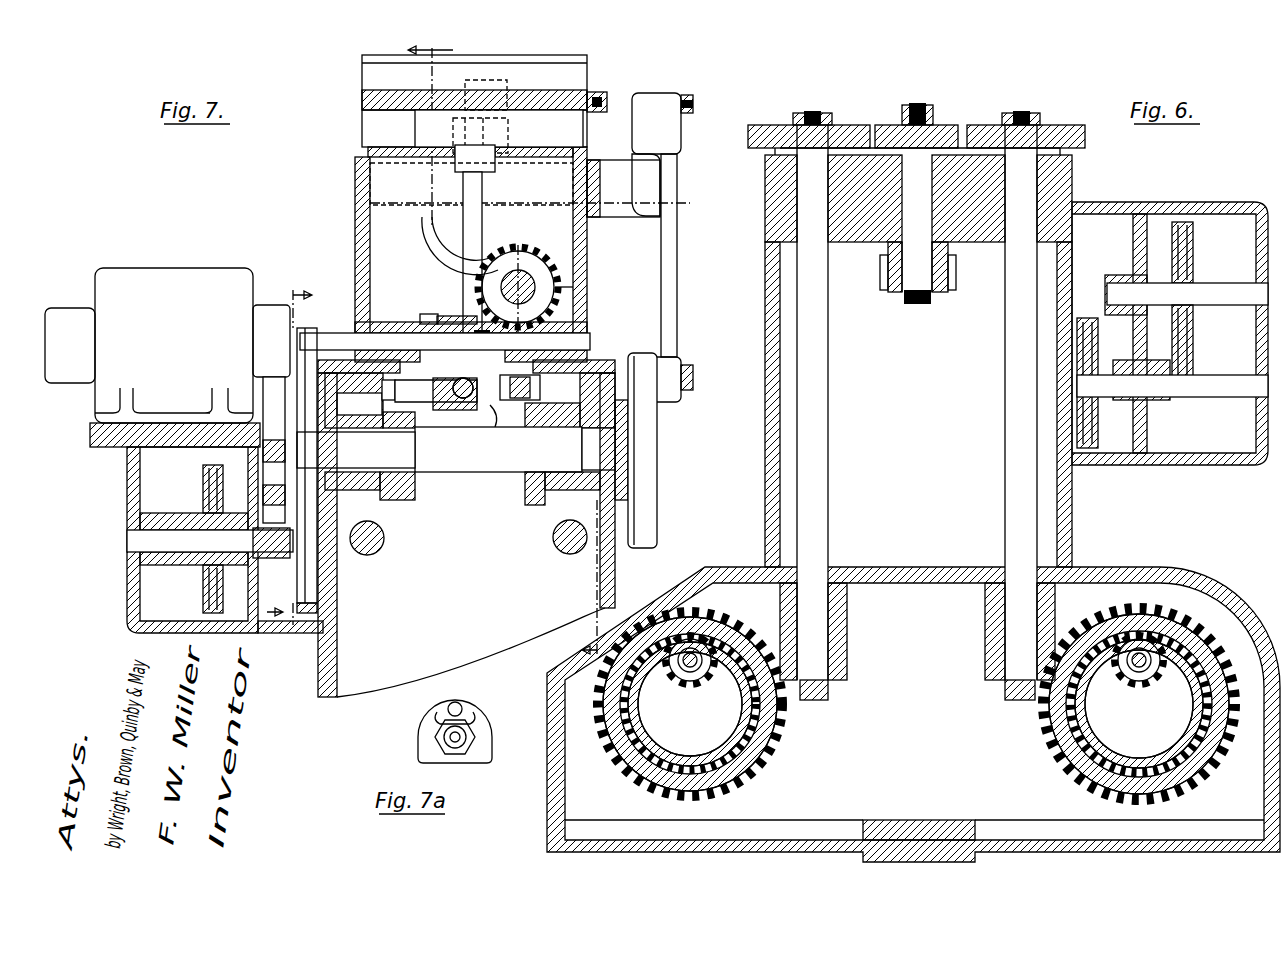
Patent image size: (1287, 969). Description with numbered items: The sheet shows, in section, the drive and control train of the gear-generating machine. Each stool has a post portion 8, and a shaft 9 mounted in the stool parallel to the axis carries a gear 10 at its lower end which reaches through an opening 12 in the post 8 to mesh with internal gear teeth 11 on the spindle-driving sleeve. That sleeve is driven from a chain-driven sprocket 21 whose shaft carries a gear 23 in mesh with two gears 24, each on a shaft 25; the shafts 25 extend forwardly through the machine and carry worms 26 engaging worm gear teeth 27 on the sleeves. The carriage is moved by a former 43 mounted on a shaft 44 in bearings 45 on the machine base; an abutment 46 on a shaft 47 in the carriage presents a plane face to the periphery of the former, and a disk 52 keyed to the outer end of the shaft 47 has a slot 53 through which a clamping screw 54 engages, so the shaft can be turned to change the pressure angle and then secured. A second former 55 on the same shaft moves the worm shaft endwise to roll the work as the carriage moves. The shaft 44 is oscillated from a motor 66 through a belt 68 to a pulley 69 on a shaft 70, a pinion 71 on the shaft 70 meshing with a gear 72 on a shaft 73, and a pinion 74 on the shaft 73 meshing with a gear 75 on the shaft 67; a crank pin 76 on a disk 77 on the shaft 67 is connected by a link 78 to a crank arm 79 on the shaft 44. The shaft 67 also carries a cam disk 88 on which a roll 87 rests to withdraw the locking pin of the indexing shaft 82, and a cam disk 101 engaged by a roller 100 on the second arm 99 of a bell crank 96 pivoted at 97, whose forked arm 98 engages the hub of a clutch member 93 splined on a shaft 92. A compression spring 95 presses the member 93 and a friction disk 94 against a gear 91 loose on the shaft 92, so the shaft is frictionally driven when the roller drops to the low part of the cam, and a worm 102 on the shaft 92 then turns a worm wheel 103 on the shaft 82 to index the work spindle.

In FIG. 6, the post portion 8 is at (627, 780).
In FIG. 7, the post portion 8 is at (495, 351).
In FIG. 6, the shaft 9 is at (692, 674).
In FIG. 6, the gear 10 is at (647, 692).
In FIG. 6, the internal gear teeth 11 is at (646, 716).
In FIG. 6, the opening 12 is at (722, 678).
In FIG. 7, the opening 12 is at (302, 455).
In FIG. 6, the sprocket 21 is at (898, 306).
In FIG. 6, the gear 23 is at (948, 125).
In FIG. 6, the gears 24 is at (771, 125).
In FIG. 6, the shafts 25 is at (830, 452).
In FIG. 6, the worms 26 is at (848, 720).
In FIG. 6, the worm gear teeth 27 is at (772, 762).
In FIG. 7, the former 43 is at (488, 86).
In FIG. 7, the shaft 44 is at (545, 188).
In FIG. 7, the bearings 45 is at (548, 112).
In FIG. 7, the abutment 46 is at (497, 172).
In FIG. 7A, the shaft 47 is at (437, 737).
In FIG. 7, the disk 52 is at (600, 92).
In FIG. 7A, the disk 52 is at (488, 733).
In FIG. 7A, the slot 53 is at (472, 713).
In FIG. 7, the clamping screw 54 is at (683, 100).
In FIG. 7A, the clamping screw 54 is at (455, 702).
In FIG. 7, the second former 55 is at (440, 255).
In FIG. 7, the motor 66 is at (145, 270).
In FIG. 7, the shaft 67 is at (478, 472).
In FIG. 7, the belt 68 is at (318, 582).
In FIG. 6, the pulley 69 is at (1094, 320).
In FIG. 7, the pulley 69 is at (320, 610).
In FIG. 6, the shaft 70 is at (1205, 376).
In FIG. 6, the pinion 71 is at (1182, 402).
In FIG. 6, the gear 72 is at (1208, 206).
In FIG. 7, the gear 72 is at (203, 482).
In FIG. 6, the shaft 73 is at (1205, 288).
In FIG. 7, the shaft 73 is at (128, 543).
In FIG. 6, the pinion 74 is at (1122, 275).
In FIG. 7, the pinion 74 is at (213, 574).
In FIG. 7, the gear 75 is at (265, 375).
In FIG. 7, the crank pin 76 is at (695, 380).
In FIG. 7, the disk 77 is at (645, 448).
In FIG. 7, the link 78 is at (678, 310).
In FIG. 7, the crank arm 79 is at (648, 155).
In FIG. 7, the shaft 82 is at (526, 268).
In FIG. 7, the roll 87 is at (540, 396).
In FIG. 7, the cam disk 88 is at (530, 508).
In FIG. 7, the gear 91 is at (410, 326).
In FIG. 7, the shaft 92 is at (590, 336).
In FIG. 7, the clutch member 93 is at (470, 330).
In FIG. 7, the friction disk 94 is at (428, 314).
In FIG. 7, the compression spring 95 is at (518, 428).
In FIG. 7, the bell crank 96 is at (500, 432).
In FIG. 7, the pivot 97 is at (465, 412).
In FIG. 7, the forked arm 98 is at (485, 253).
In FIG. 7, the second arm 99 is at (402, 432).
In FIG. 7, the roller 100 is at (386, 392).
In FIG. 7, the cam disk 101 is at (392, 502).
In FIG. 7, the worm 102 is at (580, 346).
In FIG. 7, the worm wheel 103 is at (575, 288).